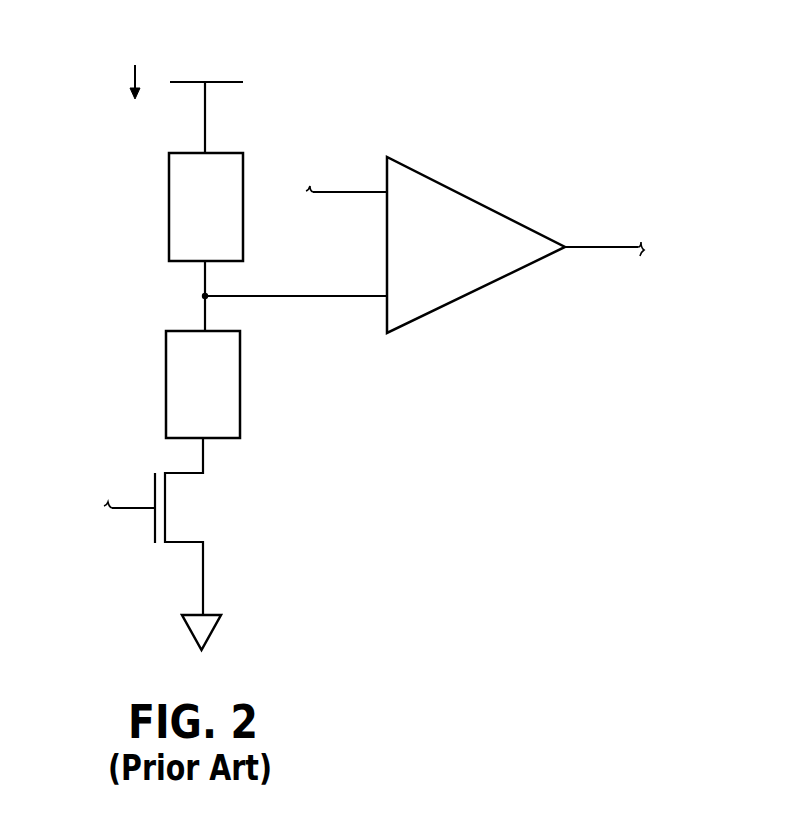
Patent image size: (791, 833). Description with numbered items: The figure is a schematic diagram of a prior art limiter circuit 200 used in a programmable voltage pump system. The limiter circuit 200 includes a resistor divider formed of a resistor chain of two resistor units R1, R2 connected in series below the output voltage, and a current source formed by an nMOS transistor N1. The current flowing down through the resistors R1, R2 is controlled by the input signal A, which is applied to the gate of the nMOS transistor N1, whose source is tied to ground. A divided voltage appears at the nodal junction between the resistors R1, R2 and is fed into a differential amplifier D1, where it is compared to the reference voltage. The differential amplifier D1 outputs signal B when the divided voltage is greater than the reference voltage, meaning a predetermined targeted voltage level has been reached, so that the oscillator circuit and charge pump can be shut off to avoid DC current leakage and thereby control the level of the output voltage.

The limiter circuit 200 is at (539, 90).
The resistor unit R1 is at (206, 207).
The resistor unit R2 is at (203, 384).
The nMOS transistor N1 is at (206, 526).
The differential amplifier D1 is at (476, 245).